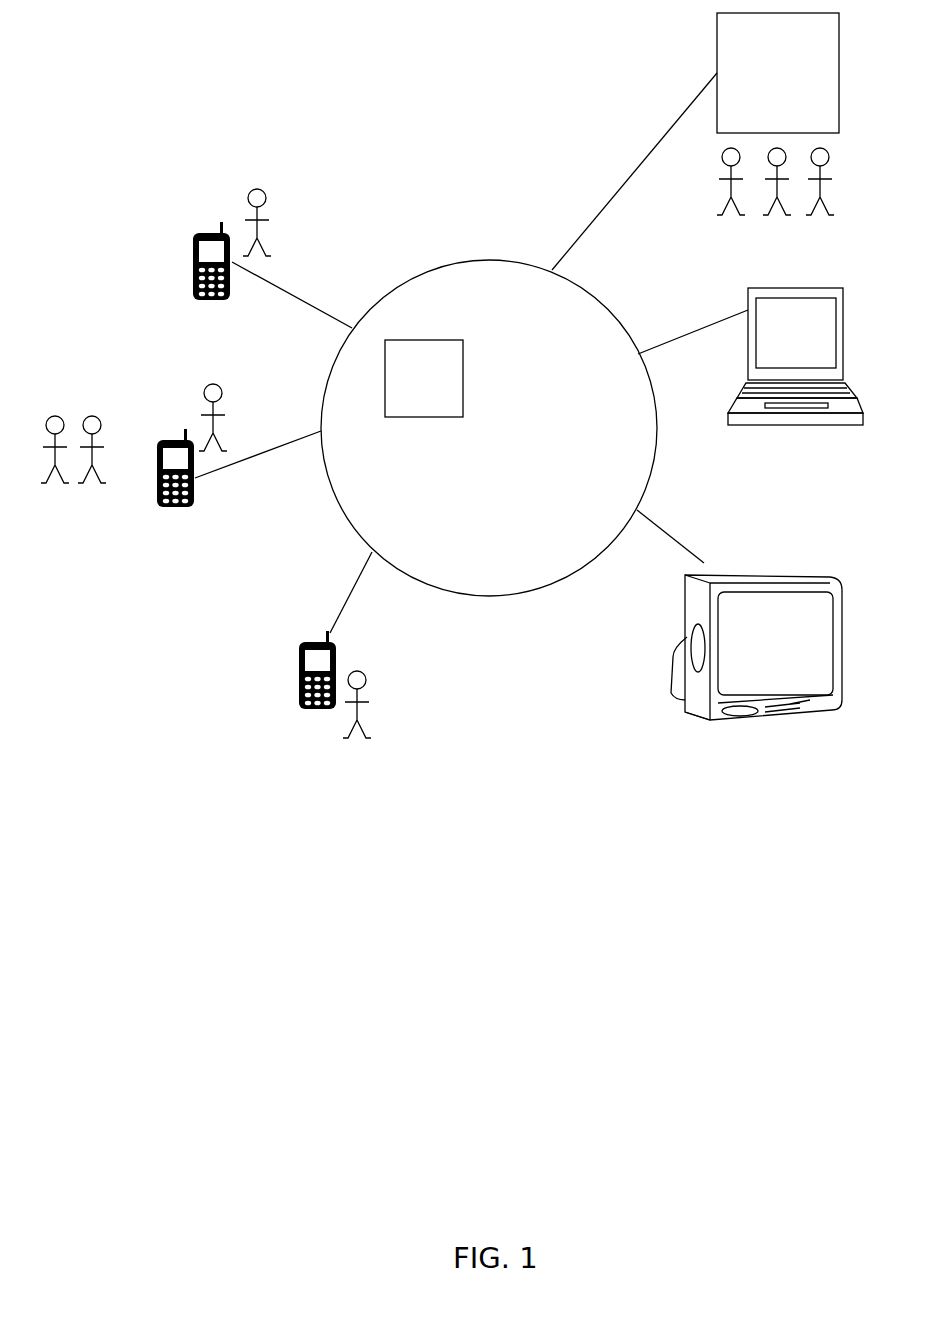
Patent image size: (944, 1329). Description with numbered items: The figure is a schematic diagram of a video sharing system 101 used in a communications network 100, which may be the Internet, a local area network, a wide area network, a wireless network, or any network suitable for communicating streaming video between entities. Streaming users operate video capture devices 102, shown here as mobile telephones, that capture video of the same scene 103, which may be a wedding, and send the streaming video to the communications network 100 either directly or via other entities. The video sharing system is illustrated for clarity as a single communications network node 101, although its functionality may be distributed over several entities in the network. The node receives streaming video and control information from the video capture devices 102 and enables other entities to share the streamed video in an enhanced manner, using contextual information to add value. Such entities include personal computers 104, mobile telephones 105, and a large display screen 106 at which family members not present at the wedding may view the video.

The communications network 100 is at (490, 258).
The video sharing system 101 is at (415, 419).
The video capture devices 102 is at (206, 232).
The scene 103 is at (63, 492).
The personal computers 104 is at (845, 338).
The mobile telephones 105 is at (857, 632).
The large display screen 106 is at (838, 67).